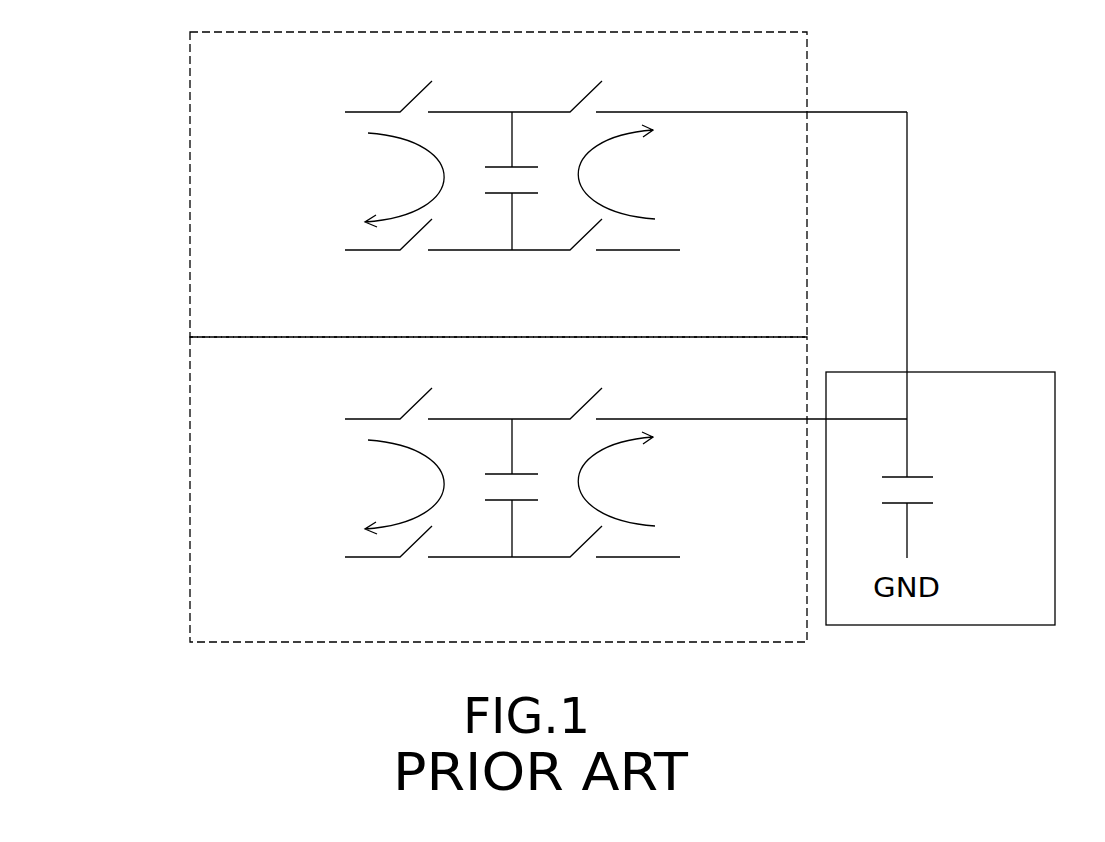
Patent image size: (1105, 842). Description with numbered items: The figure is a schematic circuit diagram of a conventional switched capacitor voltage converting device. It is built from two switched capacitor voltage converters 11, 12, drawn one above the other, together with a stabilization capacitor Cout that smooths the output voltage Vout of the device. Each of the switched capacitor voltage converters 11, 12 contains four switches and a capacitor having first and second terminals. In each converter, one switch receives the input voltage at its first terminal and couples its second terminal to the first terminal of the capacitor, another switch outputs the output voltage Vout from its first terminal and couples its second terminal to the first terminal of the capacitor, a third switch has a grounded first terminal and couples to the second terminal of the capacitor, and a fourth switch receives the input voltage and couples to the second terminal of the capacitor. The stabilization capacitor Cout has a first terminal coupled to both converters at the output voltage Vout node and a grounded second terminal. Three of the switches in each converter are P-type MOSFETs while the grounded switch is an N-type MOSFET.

The switched capacitor voltage converter 11 is at (190, 192).
The switched capacitor voltage converter 12 is at (190, 485).
The stabilization capacitor Cout is at (951, 517).
The output voltage Vout is at (948, 294).